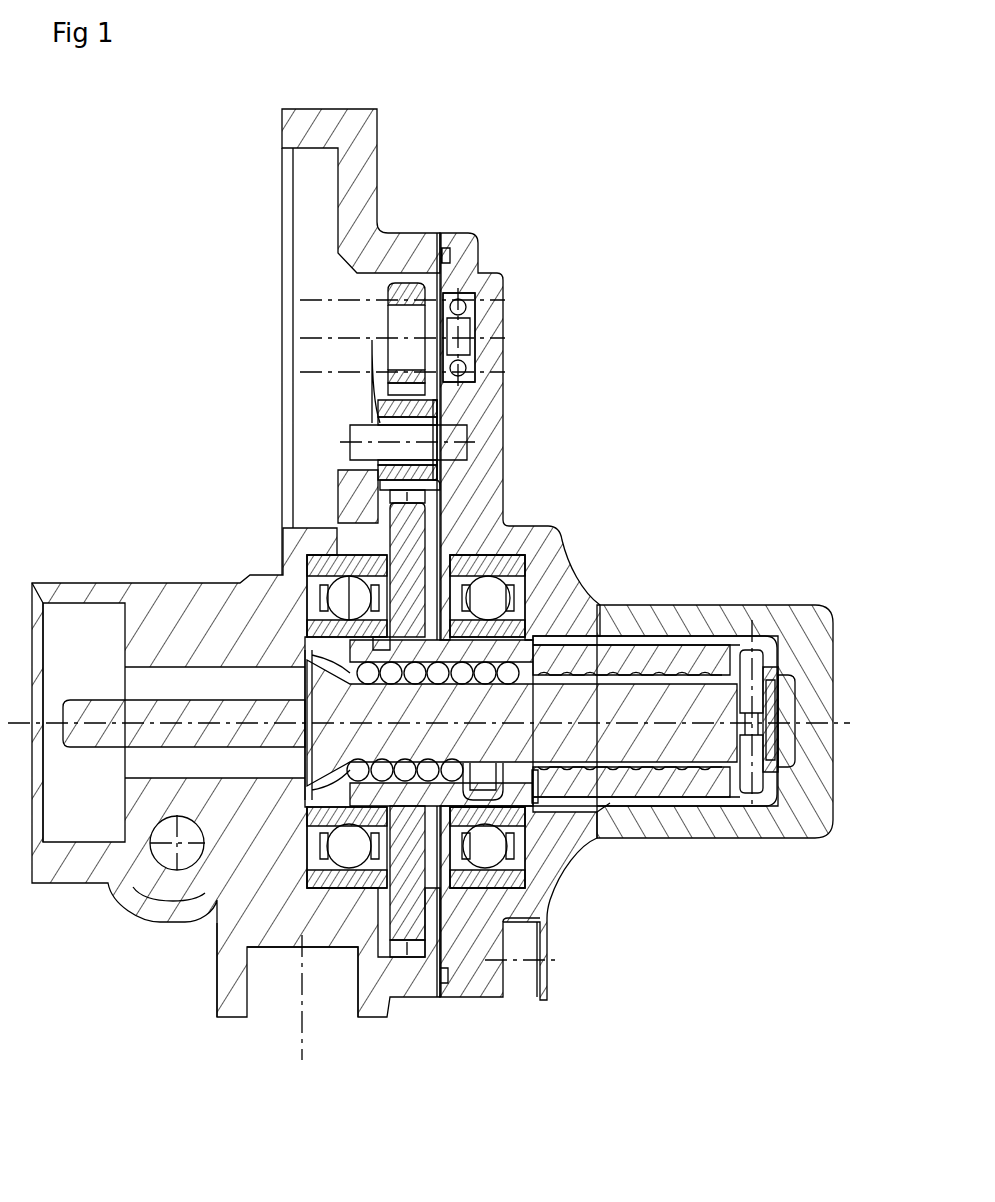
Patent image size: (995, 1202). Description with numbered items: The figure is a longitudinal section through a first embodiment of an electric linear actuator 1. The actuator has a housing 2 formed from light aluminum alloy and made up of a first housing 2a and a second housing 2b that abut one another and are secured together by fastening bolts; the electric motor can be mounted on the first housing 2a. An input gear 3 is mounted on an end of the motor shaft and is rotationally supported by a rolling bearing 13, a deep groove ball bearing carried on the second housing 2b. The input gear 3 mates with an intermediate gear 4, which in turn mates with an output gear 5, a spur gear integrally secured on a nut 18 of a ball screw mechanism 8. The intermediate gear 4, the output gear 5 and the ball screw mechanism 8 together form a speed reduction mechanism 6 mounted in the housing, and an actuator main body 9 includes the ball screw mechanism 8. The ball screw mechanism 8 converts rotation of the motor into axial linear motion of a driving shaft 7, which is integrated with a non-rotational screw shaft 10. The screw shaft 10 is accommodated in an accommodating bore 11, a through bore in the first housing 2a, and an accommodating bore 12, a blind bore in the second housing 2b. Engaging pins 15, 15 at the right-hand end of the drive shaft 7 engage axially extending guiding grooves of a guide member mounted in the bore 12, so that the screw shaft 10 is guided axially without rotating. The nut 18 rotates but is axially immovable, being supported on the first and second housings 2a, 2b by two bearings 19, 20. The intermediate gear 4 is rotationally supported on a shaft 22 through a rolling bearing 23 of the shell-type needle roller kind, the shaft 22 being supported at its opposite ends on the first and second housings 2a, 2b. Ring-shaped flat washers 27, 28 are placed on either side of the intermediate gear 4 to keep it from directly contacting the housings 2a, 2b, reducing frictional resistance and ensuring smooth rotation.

The electric linear actuator 1 is at (159, 350).
The housing 2 is at (473, 1100).
The first housing 2a is at (410, 985).
The second housing 2b is at (465, 985).
The input gear 3 is at (413, 283).
The intermediate gear 4 is at (440, 478).
The output gear 5 is at (420, 513).
The speed reduction mechanism 6 is at (593, 428).
The driving shaft 7 is at (213, 712).
The ball screw mechanism 8 is at (547, 806).
The actuator main body 9 is at (675, 600).
The screw shaft 10 is at (658, 753).
The accommodating bore (through bore) 11 is at (145, 765).
The accommodating bore (blind bore) 12 is at (680, 655).
The rolling bearing 13 is at (487, 308).
The engaging pin 15 is at (757, 652).
The nut 18 is at (307, 640).
The bearing 19 is at (218, 948).
The bearing 20 is at (555, 917).
The shaft 22 is at (355, 432).
The rolling bearing 23 is at (375, 412).
The flat washer 27 is at (370, 465).
The flat washer 28 is at (440, 420).